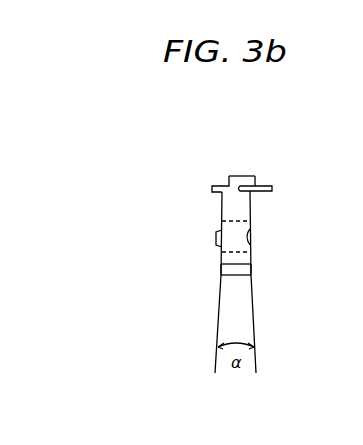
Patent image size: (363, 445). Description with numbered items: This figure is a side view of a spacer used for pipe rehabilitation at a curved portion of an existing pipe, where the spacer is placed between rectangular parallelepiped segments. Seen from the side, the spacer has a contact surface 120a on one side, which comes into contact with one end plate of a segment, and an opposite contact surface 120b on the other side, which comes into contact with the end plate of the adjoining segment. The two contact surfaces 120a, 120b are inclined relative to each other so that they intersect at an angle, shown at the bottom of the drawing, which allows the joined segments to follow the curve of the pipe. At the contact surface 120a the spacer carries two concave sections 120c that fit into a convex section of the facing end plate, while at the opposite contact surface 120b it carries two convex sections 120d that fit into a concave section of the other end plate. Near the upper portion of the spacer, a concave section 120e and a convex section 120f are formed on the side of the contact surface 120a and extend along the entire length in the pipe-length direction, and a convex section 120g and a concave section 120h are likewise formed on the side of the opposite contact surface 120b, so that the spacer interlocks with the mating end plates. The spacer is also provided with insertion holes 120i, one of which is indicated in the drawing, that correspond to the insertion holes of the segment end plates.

The contact surface 120a is at (251, 270).
The opposite contact surface 120b is at (221, 269).
The concave section 120c is at (246, 242).
The convex section 120d is at (216, 234).
The concave section 120e is at (283, 184).
The convex section 120f is at (255, 175).
The convex section 120g is at (212, 186).
The concave section 120h is at (229, 176).
The insertion hole 120i is at (232, 222).